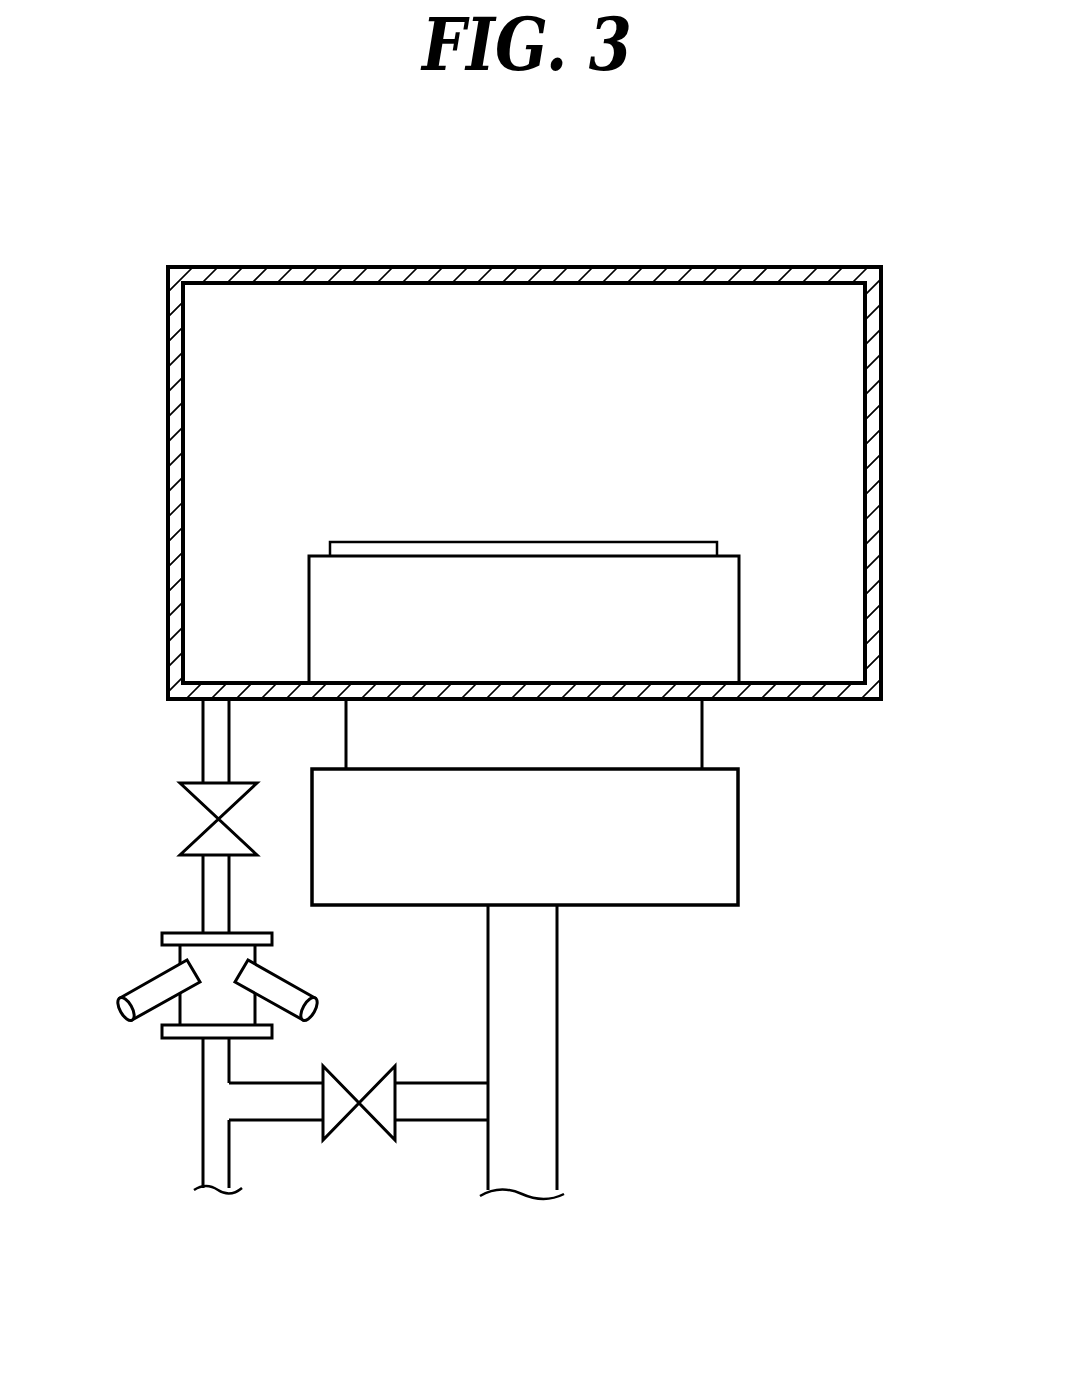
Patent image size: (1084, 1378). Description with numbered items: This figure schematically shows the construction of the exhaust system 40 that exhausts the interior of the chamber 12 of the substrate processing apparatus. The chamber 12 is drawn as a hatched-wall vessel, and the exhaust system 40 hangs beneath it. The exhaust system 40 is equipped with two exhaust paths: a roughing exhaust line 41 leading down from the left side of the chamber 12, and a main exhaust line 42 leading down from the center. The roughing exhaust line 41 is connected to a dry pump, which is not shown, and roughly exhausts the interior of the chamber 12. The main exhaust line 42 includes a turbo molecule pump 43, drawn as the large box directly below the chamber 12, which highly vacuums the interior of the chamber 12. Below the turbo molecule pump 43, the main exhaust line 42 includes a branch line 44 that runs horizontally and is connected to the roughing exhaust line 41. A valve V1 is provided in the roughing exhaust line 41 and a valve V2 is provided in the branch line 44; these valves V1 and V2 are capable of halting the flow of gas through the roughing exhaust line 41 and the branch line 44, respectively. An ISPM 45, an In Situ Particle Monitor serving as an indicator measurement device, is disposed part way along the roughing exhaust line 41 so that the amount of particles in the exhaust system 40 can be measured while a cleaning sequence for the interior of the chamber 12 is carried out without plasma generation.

The chamber 12 is at (836, 252).
The exhaust system 40 is at (577, 959).
The roughing exhaust line 41 is at (203, 895).
The main exhaust line 42 is at (560, 1064).
The turbo molecule pump 43 is at (687, 906).
The branch line 44 is at (450, 1120).
The ISPM 45 is at (143, 980).
The valve V1 is at (190, 797).
The valve V2 is at (340, 1128).